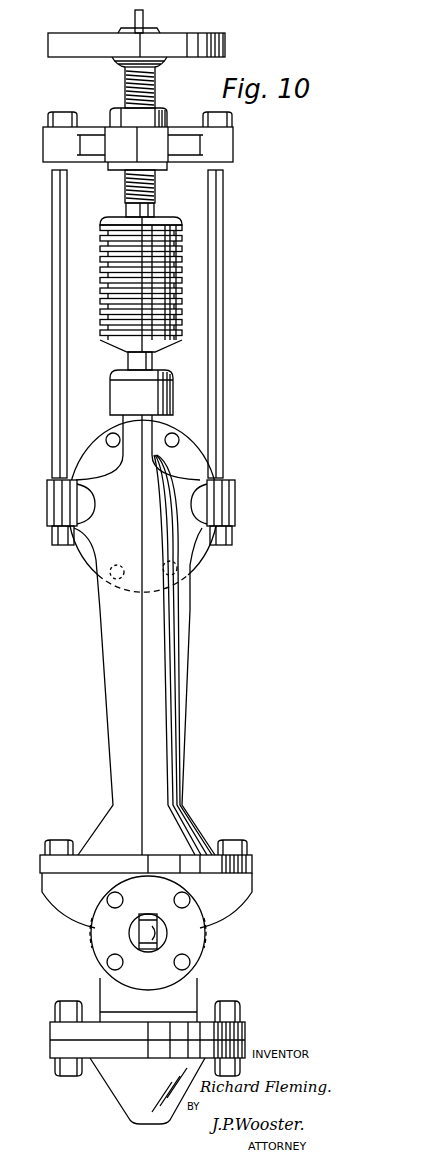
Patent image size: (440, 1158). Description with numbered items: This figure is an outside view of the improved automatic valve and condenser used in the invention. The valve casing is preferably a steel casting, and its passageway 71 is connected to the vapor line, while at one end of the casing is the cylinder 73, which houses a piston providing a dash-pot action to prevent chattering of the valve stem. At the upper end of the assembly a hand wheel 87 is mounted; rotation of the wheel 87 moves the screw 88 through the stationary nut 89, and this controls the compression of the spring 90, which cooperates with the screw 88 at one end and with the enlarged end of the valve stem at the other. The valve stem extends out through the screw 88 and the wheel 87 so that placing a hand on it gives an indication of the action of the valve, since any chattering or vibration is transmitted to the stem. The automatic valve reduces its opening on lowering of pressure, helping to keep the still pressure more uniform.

The wheel 87 is at (228, 43).
The screw 88 is at (127, 107).
The stationary nut 89 is at (118, 135).
The spring 90 is at (102, 240).
The passageway 71 is at (153, 932).
The cylinder 73 is at (193, 985).